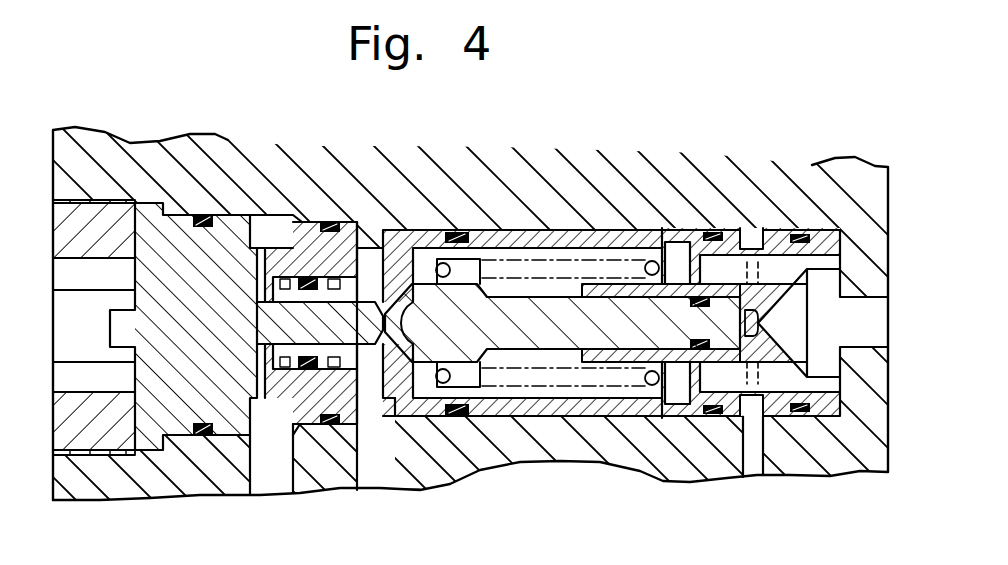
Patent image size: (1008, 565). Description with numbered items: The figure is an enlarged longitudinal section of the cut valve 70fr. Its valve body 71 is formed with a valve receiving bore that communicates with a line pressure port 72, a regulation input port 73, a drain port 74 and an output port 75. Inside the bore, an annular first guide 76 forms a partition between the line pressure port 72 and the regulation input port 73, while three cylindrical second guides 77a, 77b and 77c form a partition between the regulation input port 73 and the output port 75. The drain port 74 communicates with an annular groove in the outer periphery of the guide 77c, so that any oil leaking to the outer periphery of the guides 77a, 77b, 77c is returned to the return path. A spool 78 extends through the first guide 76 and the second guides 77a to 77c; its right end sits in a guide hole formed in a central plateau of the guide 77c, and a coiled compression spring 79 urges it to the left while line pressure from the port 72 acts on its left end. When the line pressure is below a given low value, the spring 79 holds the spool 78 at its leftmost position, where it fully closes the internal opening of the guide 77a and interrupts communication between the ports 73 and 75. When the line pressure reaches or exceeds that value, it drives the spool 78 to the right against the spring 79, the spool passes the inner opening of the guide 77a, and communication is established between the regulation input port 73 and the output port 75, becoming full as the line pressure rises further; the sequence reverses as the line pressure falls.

The cut valve 70fr is at (634, 168).
The valve body 71 is at (483, 452).
The line pressure port 72 is at (272, 478).
The regulation input port 73 is at (378, 472).
The drain port 74 is at (758, 465).
The output port 75 is at (863, 330).
The annular first guide 76 is at (311, 428).
The second guide 77a is at (436, 418).
The second guide 77b is at (603, 408).
The second guide 77c is at (730, 418).
The spool 78 is at (557, 333).
The coiled compression spring 79 is at (527, 258).